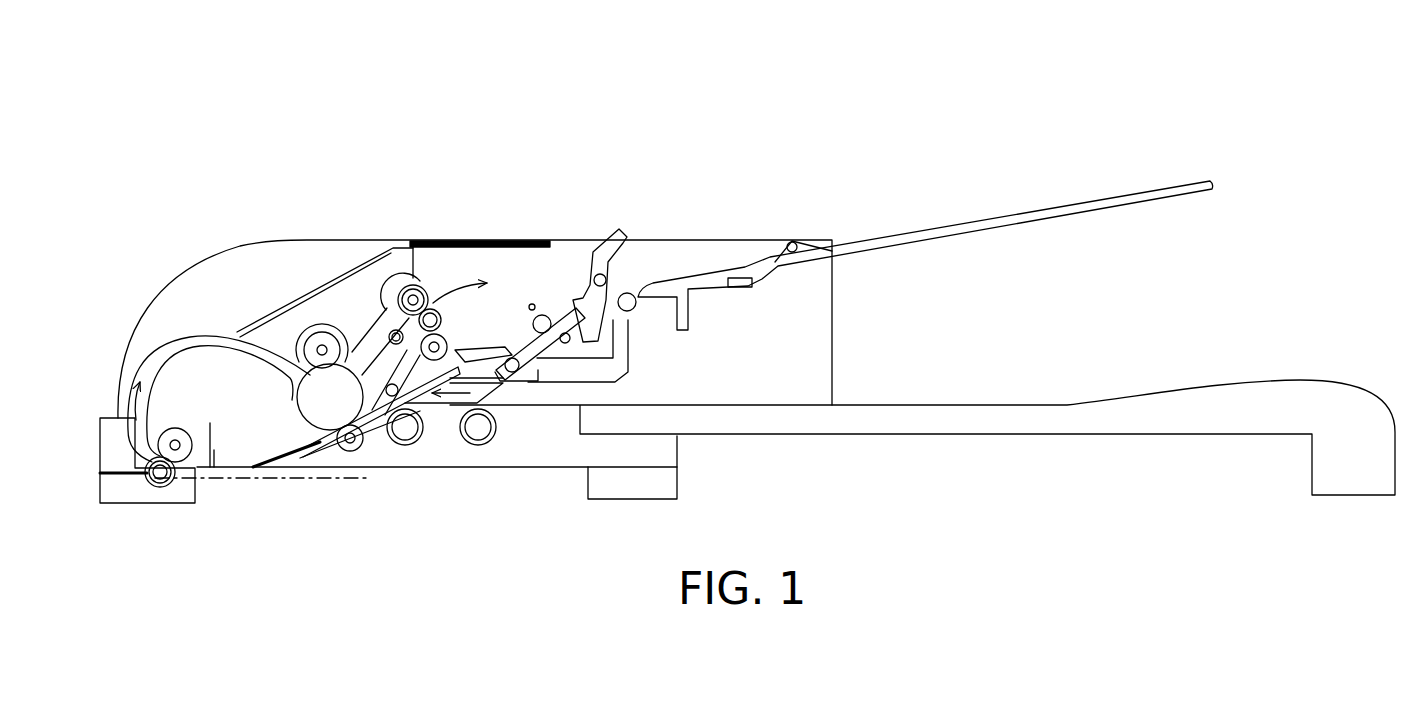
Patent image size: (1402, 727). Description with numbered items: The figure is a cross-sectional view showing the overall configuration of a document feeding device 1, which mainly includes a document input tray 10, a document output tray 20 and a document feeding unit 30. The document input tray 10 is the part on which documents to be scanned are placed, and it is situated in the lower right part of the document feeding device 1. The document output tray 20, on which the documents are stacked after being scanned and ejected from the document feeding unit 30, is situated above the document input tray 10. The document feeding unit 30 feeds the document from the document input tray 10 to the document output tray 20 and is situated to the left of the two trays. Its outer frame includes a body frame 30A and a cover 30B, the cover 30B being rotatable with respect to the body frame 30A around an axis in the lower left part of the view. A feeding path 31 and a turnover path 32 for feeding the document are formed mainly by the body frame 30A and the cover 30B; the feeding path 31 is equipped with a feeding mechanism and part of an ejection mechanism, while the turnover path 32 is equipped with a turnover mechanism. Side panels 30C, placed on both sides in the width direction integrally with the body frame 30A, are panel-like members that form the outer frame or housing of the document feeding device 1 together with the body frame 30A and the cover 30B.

The document feeding device 1 is at (173, 117).
The document input tray 10 is at (1027, 380).
The document output tray 20 is at (978, 205).
The document feeding unit 30 is at (155, 283).
The body frame 30A is at (97, 413).
The cover 30B is at (300, 235).
The side panels 30C is at (683, 245).
The feeding path 31 is at (152, 348).
The turnover path 32 is at (412, 344).